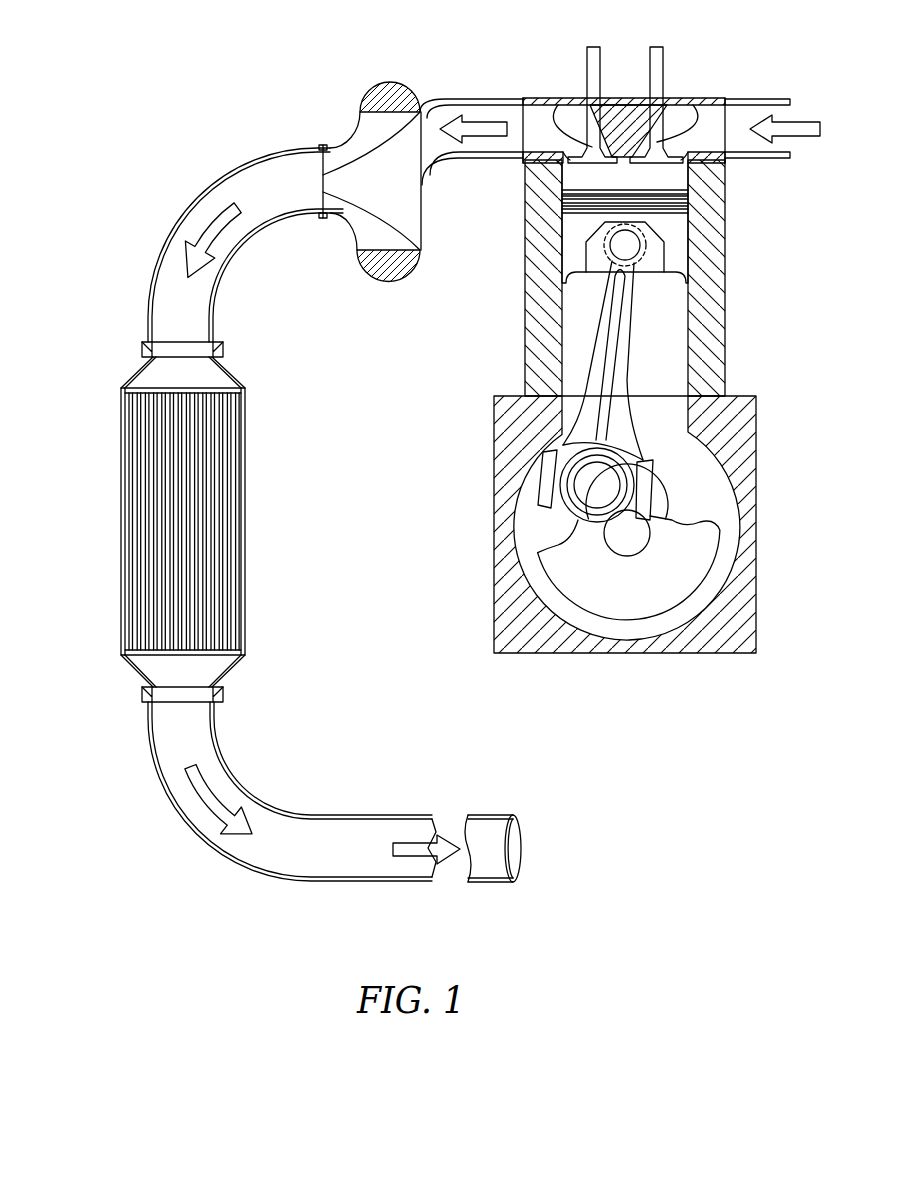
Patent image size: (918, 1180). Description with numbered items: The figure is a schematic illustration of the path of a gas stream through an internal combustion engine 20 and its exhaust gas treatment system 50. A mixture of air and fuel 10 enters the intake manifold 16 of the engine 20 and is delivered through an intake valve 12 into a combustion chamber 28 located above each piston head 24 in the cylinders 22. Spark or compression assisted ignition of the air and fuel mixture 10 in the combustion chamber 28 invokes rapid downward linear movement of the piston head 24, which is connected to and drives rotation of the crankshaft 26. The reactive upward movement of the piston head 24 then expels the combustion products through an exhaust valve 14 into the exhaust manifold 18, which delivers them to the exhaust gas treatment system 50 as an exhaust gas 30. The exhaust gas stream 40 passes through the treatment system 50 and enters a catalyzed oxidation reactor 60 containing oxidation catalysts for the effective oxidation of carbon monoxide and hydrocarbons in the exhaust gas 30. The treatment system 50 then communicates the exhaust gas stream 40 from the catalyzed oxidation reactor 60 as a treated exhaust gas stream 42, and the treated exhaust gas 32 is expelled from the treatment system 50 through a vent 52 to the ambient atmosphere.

The mixture of air and fuel 10 is at (802, 122).
The intake valve 12 is at (657, 142).
The exhaust valve 14 is at (592, 147).
The intake manifold 16 is at (758, 100).
The exhaust manifold 18 is at (510, 98).
The internal combustion engine 20 is at (725, 253).
The cylinders 22 is at (690, 355).
The piston head 24 is at (572, 253).
The crankshaft 26 is at (598, 487).
The combustion chamber 28 is at (690, 177).
The exhaust gas 30 is at (482, 120).
The treated exhaust gas 32 is at (410, 855).
The exhaust gas stream 40 is at (200, 240).
The treated exhaust gas stream 42 is at (208, 802).
The exhaust gas treatment system 50 is at (178, 150).
The vent 52 is at (520, 848).
The catalyzed oxidation reactor 60 is at (115, 479).